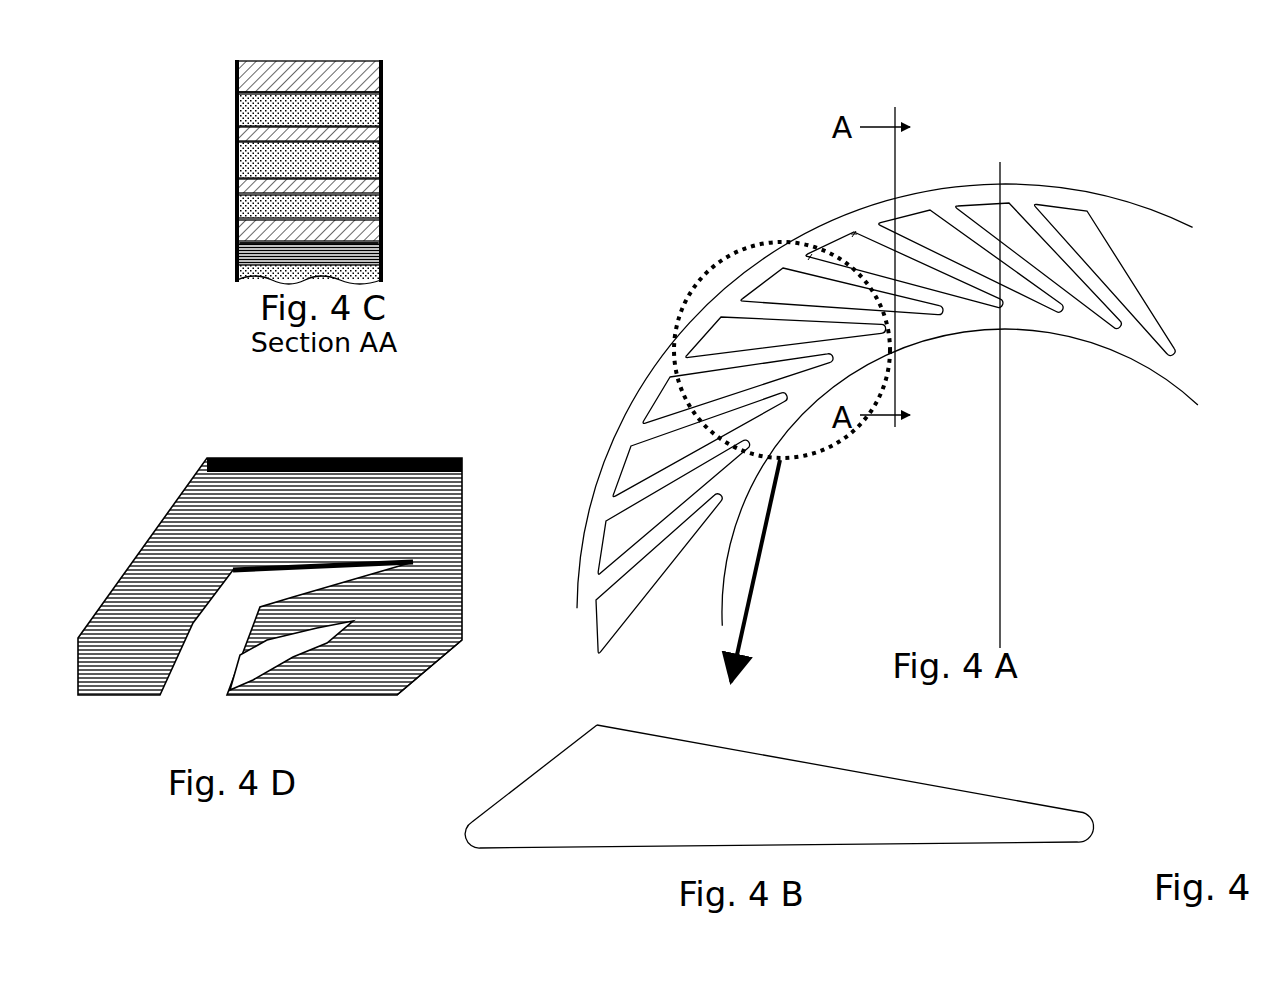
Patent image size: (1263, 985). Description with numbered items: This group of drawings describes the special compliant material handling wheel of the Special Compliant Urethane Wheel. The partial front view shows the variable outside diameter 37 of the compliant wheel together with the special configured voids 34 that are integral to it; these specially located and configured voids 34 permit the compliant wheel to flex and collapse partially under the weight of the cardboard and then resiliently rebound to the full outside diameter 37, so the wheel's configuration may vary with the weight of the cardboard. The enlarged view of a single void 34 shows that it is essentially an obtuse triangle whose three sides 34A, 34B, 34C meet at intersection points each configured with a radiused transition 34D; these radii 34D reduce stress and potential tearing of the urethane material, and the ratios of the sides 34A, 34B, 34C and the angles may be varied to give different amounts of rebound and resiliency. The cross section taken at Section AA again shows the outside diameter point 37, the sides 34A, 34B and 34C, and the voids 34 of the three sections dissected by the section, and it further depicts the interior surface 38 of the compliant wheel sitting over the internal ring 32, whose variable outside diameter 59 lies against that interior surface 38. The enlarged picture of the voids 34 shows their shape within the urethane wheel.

In FIG. 4C, the internal ring 32 is at (263, 255).
In FIG. 4C, the special configured voids 34 is at (253, 107).
In FIG. 4A, the special configured voids 34 is at (885, 377).
In FIG. 4B, the special configured voids 34 is at (773, 778).
In FIG. 4D, the special configured voids 34 is at (242, 577).
In FIG. 4C, the side of void 34A is at (255, 143).
In FIG. 4A, the side of void 34A is at (957, 278).
In FIG. 4B, the side of void 34A is at (852, 768).
In FIG. 4C, the side of void 34B is at (237, 88).
In FIG. 4A, the side of void 34B is at (911, 306).
In FIG. 4B, the side of void 34B is at (543, 762).
In FIG. 4C, the side of void 34C is at (237, 128).
In FIG. 4A, the side of void 34C is at (930, 257).
In FIG. 4B, the side of void 34C is at (577, 848).
In FIG. 4B, the radiused transition 34D is at (593, 723).
In FIG. 4C, the variable outside diameter of compliant ring 37 is at (327, 60).
In FIG. 4A, the variable outside diameter of compliant ring 37 is at (893, 190).
In FIG. 4D, the variable outside diameter of compliant ring 37 is at (167, 495).
In FIG. 4C, the internal surface of compliant ring 38 is at (367, 237).
In FIG. 4D, the internal surface of compliant ring 38 is at (402, 693).
In FIG. 4C, the variable outside diameter of internal ring 59 is at (360, 247).